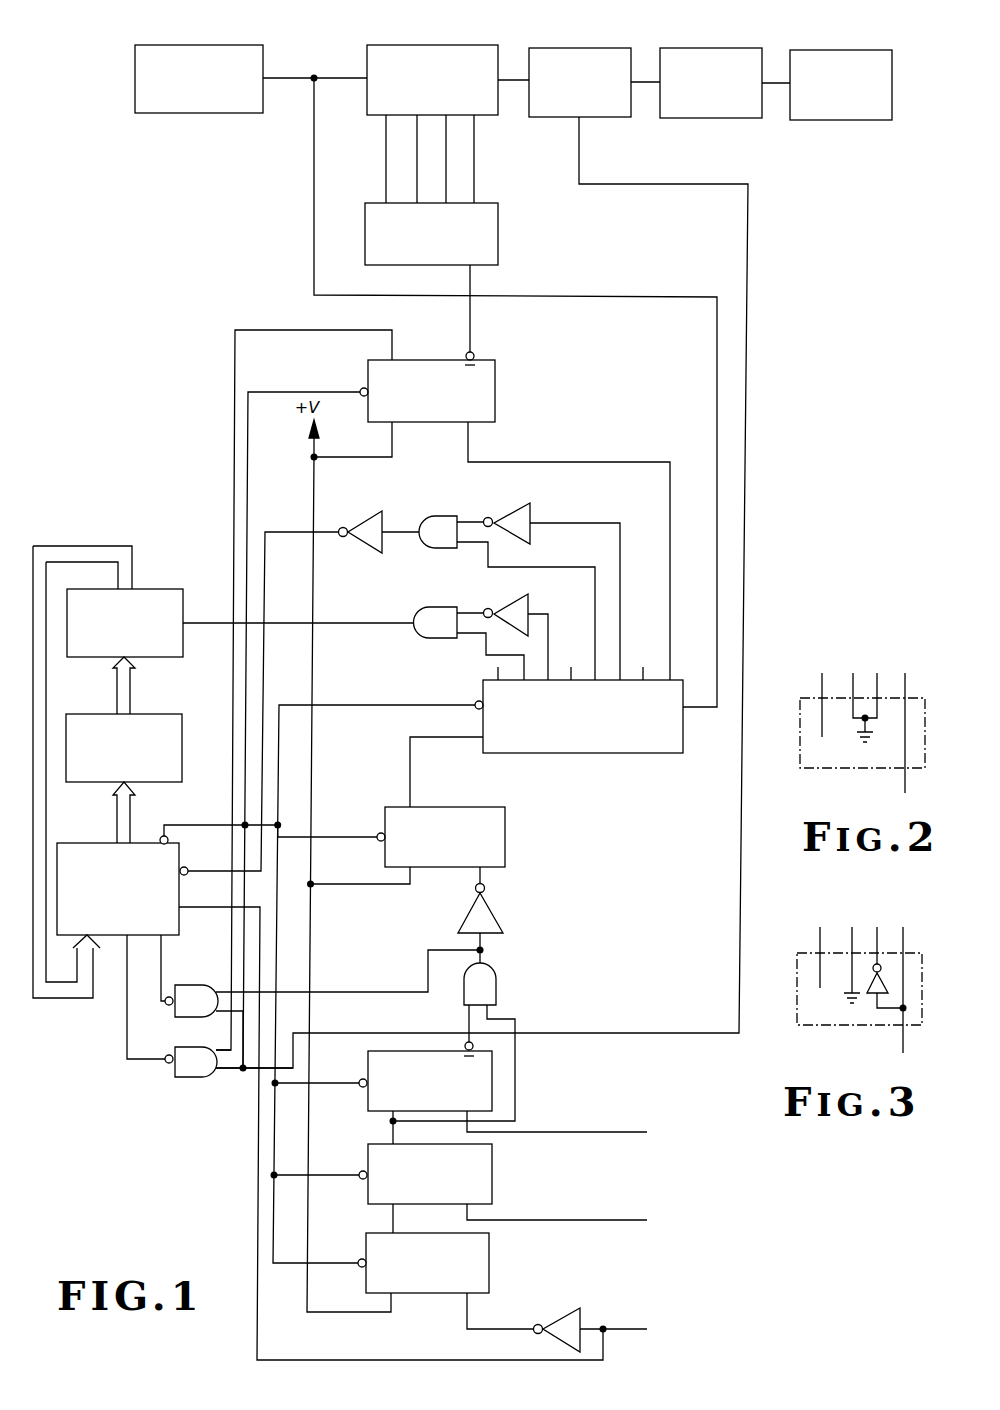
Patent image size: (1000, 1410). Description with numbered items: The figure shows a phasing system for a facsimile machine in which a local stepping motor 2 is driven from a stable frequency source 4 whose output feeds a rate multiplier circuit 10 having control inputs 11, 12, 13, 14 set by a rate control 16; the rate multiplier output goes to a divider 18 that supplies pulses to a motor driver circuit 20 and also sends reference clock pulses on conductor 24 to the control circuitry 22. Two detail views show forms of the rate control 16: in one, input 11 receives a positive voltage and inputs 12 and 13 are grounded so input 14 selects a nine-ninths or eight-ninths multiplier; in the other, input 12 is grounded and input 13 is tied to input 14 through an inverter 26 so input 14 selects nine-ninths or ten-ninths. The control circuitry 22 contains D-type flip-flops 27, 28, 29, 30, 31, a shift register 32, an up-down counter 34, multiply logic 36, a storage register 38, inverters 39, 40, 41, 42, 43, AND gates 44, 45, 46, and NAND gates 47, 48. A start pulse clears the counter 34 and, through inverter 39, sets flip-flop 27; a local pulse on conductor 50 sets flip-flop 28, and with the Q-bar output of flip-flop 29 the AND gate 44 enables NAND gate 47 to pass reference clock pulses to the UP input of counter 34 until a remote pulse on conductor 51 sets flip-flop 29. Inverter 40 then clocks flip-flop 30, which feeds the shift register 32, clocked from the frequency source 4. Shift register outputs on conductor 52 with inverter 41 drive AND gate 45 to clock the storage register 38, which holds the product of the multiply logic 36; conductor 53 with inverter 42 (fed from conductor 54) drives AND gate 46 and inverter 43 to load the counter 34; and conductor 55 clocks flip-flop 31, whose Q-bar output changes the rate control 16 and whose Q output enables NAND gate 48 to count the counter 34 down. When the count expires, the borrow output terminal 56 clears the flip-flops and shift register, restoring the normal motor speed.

In FIG. 1, the local stepping motor 2 is at (836, 50).
In FIG. 1, the frequency source 4 is at (210, 45).
In FIG. 1, the rate multiplier circuit 10 is at (438, 45).
In FIG. 1, the control input 11 is at (386, 150).
In FIG. 2, the control input 11 is at (822, 680).
In FIG. 3, the control input 11 is at (820, 934).
In FIG. 1, the control input 12 is at (417, 160).
In FIG. 2, the control input 12 is at (853, 676).
In FIG. 3, the control input 12 is at (852, 930).
In FIG. 1, the control input 13 is at (446, 158).
In FIG. 2, the control input 13 is at (877, 674).
In FIG. 3, the control input 13 is at (877, 928).
In FIG. 1, the control input 14 is at (476, 160).
In FIG. 2, the control input 14 is at (905, 678).
In FIG. 3, the control input 14 is at (905, 932).
In FIG. 1, the rate control 16 is at (498, 236).
In FIG. 2, the rate control 16 is at (812, 770).
In FIG. 3, the rate control 16 is at (812, 1027).
In FIG. 1, the divider 18 is at (587, 48).
In FIG. 1, the motor driver circuit 20 is at (710, 48).
In FIG. 1, the control circuitry 22 is at (602, 422).
In FIG. 1, the conductor 24 is at (748, 238).
In FIG. 3, the inverter 26 is at (875, 1000).
In FIG. 1, the D-type flip-flop 27 is at (489, 1263).
In FIG. 1, the D-type flip-flop 28 is at (492, 1175).
In FIG. 1, the D-type flip-flop 29 is at (437, 1051).
In FIG. 1, the D-type flip-flop 30 is at (505, 834).
In FIG. 1, the D-type flip-flop 31 is at (495, 384).
In FIG. 1, the shift register 32 is at (591, 753).
In FIG. 1, the up-down counter 34 is at (82, 843).
In FIG. 1, the multiply logic 36 is at (170, 714).
In FIG. 1, the storage register 38 is at (165, 589).
In FIG. 1, the inverter 39 is at (570, 1308).
In FIG. 1, the inverter 40 is at (496, 916).
In FIG. 1, the inverter 41 is at (511, 604).
In FIG. 1, the inverter 42 is at (521, 506).
In FIG. 1, the inverter 43 is at (368, 520).
In FIG. 1, the AND gate 44 is at (497, 986).
In FIG. 1, the AND gate 45 is at (433, 607).
In FIG. 1, the AND gate 46 is at (437, 516).
In FIG. 1, the NAND gate 47 is at (190, 985).
In FIG. 1, the NAND gate 48 is at (195, 1077).
In FIG. 1, the conductor 50 is at (605, 1220).
In FIG. 1, the conductor 51 is at (612, 1132).
In FIG. 1, the conductor 52 is at (485, 652).
In FIG. 1, the conductor 53 is at (583, 567).
In FIG. 1, the conductor 54 is at (600, 523).
In FIG. 1, the conductor 55 is at (634, 462).
In FIG. 1, the borrow output terminal 56 is at (192, 825).